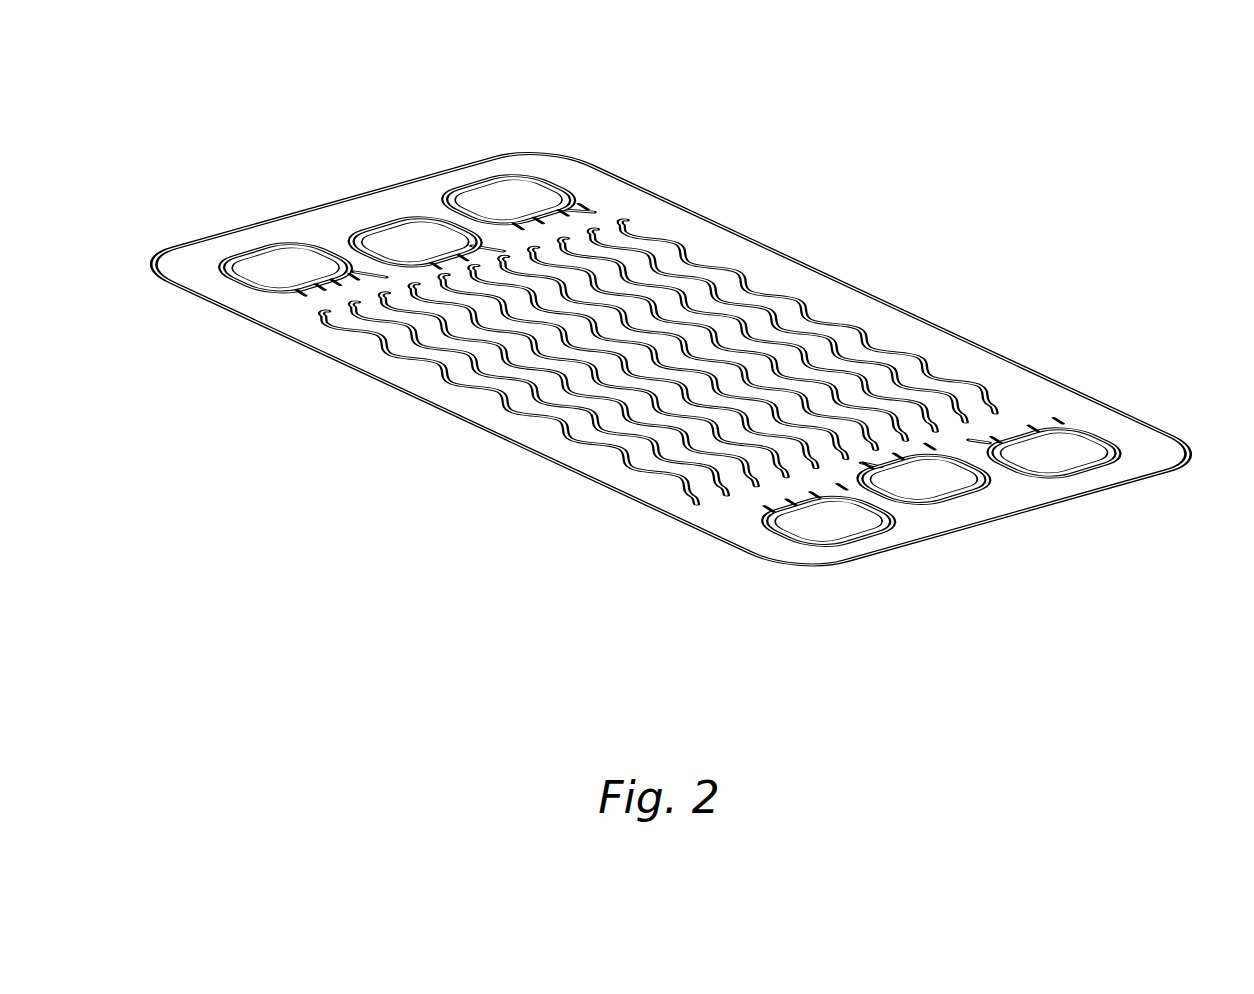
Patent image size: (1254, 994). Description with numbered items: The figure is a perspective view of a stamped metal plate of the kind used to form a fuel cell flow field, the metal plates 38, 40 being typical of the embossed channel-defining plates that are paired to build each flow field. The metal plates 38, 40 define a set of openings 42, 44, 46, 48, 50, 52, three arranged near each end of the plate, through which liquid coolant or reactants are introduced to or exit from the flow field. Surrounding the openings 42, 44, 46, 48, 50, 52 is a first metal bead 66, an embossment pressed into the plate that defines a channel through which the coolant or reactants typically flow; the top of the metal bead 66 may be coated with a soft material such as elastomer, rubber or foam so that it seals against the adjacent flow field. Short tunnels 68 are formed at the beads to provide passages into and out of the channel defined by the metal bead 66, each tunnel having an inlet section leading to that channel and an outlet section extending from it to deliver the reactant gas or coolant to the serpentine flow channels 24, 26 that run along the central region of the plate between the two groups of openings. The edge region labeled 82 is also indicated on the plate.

The flow channel 24 is at (659, 276).
The flow channel 26 is at (687, 300).
The metal plate 38 is at (955, 322).
The metal plate 40 is at (680, 363).
The opening 42 is at (517, 192).
The opening 44 is at (403, 238).
The opening 46 is at (277, 263).
The opening 48 is at (832, 528).
The opening 50 is at (930, 472).
The opening 52 is at (1060, 450).
The first metal bead 66 is at (303, 243).
The tunnel 68 is at (763, 507).
The plate edge rim 82 is at (1058, 383).